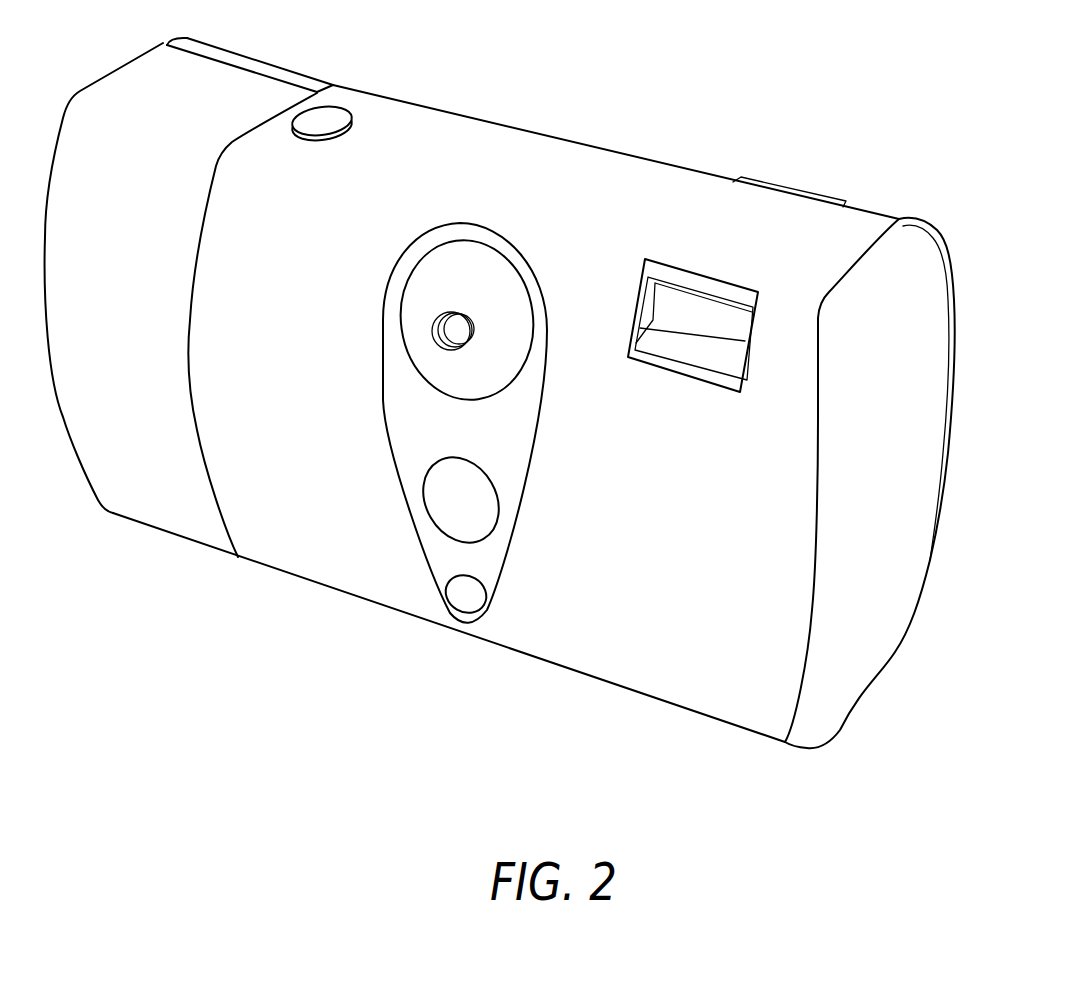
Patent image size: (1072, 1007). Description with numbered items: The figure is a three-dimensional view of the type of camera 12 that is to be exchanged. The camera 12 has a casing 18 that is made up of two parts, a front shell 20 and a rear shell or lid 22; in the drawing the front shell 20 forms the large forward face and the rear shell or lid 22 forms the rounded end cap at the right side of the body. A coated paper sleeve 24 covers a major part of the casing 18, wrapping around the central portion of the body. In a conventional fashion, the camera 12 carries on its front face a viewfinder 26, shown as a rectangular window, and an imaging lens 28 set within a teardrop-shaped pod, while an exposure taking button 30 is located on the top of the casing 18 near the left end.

The camera 12 is at (921, 152).
The casing 18 is at (979, 536).
The front shell 20 is at (862, 670).
The rear shell or lid 22 is at (956, 360).
The coated paper sleeve 24 is at (630, 692).
The viewfinder 26 is at (668, 310).
The imaging lens 28 is at (457, 328).
The exposure taking button 30 is at (333, 118).